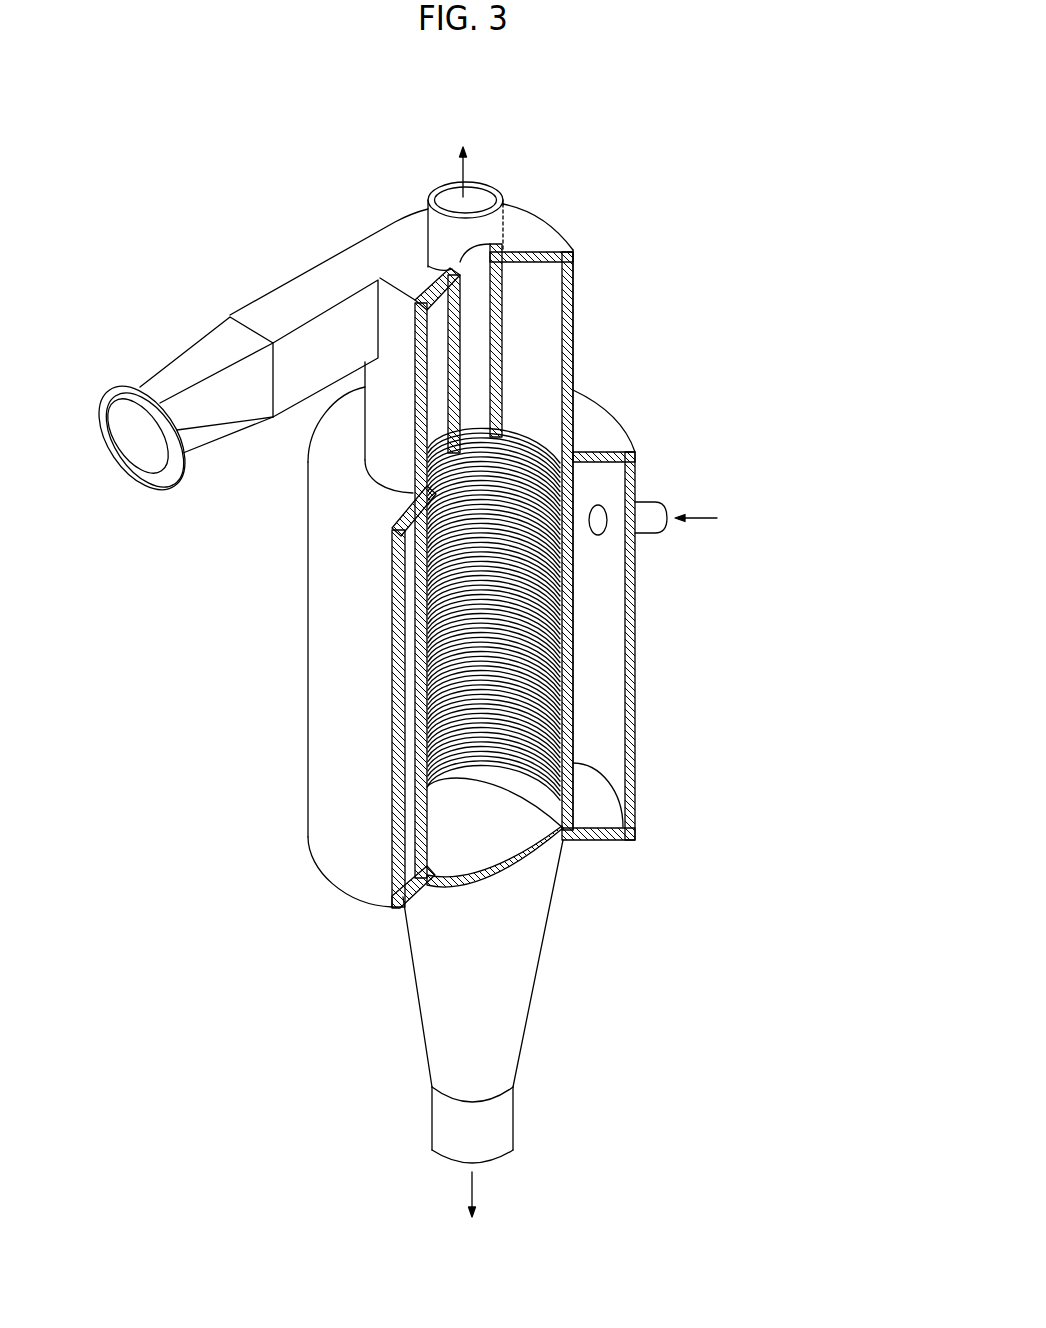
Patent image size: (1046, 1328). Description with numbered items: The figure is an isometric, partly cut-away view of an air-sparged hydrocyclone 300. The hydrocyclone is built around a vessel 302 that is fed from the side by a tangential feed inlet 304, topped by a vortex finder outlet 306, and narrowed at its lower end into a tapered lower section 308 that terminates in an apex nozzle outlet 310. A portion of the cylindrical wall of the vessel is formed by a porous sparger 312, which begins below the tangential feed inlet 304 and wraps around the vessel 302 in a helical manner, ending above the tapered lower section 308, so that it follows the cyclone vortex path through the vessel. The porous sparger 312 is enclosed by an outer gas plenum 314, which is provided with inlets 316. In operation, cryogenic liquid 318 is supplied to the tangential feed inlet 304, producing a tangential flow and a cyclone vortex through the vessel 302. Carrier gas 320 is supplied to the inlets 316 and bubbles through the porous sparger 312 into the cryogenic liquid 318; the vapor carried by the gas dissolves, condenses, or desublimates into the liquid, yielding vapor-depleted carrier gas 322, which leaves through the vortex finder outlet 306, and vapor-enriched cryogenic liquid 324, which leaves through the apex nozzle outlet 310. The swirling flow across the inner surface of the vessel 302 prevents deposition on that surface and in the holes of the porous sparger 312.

The air-sparged hydrocyclone 300 is at (154, 176).
The vessel 302 is at (553, 302).
The tangential feed inlet 304 is at (192, 400).
The vortex finder outlet 306 is at (435, 223).
The tapered lower section 308 is at (527, 990).
The apex nozzle outlet 310 is at (437, 1115).
The porous sparger 312 is at (553, 716).
The outer gas plenum 314 is at (613, 457).
The inlets 316 is at (648, 500).
The cryogenic liquid 318 is at (130, 448).
The carrier gas 320 is at (704, 521).
The vapor-depleted carrier gas 322 is at (463, 155).
The vapor-enriched cryogenic liquid 324 is at (473, 1214).